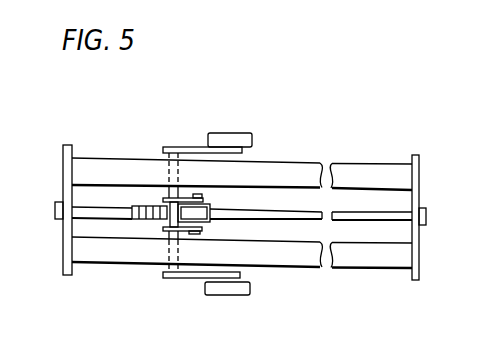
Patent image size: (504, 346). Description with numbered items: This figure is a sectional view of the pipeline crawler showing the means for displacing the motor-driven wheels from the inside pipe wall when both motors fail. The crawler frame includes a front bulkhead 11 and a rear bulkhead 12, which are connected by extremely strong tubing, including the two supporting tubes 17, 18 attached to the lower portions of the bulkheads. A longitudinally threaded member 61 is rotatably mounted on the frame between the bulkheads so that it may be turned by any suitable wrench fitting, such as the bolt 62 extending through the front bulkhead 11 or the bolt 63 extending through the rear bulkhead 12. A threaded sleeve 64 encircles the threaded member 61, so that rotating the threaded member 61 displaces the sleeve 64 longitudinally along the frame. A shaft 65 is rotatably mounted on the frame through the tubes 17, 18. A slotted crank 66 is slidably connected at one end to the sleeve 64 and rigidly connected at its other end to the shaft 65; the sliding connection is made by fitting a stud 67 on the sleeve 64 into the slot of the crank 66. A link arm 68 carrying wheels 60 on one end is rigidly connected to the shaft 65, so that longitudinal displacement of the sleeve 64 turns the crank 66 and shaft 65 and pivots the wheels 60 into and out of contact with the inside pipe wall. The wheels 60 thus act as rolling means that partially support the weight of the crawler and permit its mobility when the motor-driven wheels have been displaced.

The front bulkhead 11 is at (68, 145).
The rear bulkhead 12 is at (417, 155).
The supporting tube 17 is at (362, 158).
The supporting tube 18 is at (353, 268).
The wheels 60 is at (245, 133).
The threaded member 61 is at (147, 203).
The bolt 62 is at (55, 208).
The bolt 63 is at (426, 214).
The threaded sleeve 64 is at (262, 166).
The shaft 65 is at (169, 147).
The slotted crank 66 is at (160, 228).
The stud 67 is at (197, 194).
The link arm 68 is at (190, 278).